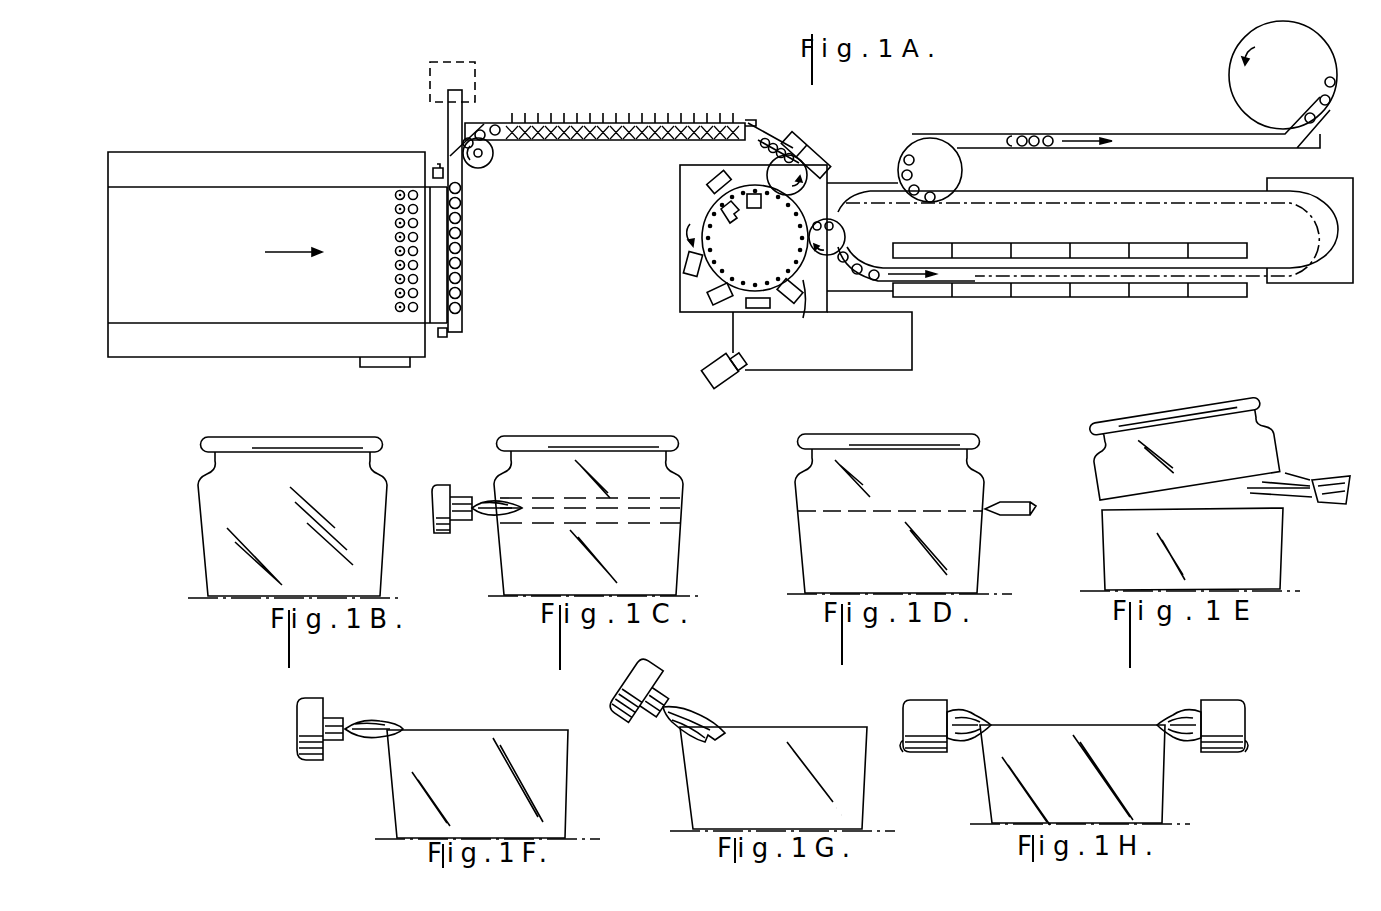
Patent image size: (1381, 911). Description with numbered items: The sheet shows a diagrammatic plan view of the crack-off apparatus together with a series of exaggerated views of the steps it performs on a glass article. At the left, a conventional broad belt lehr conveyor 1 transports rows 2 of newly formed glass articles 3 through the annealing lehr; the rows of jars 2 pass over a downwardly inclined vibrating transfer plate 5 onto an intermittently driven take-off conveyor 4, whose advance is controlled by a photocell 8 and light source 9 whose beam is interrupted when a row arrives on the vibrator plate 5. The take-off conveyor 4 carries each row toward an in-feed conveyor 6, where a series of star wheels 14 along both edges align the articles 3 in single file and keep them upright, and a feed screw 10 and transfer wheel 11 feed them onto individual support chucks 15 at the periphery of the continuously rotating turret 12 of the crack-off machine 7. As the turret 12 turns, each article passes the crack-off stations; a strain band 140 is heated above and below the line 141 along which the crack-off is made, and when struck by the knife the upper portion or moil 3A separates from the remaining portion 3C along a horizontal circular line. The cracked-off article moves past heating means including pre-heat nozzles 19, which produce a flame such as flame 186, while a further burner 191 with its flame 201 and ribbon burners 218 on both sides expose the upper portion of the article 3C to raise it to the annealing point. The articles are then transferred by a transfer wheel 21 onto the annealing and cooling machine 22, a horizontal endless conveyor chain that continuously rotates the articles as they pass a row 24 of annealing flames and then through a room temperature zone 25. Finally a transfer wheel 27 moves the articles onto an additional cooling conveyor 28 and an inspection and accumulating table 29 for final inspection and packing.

In FIG. 1A, the lehr conveyor 1 is at (205, 267).
In FIG. 1A, the rows of glass articles 2 is at (396, 281).
In FIG. 1A, the glass article 3 is at (464, 277).
In FIG. 1B, the glass article 3 is at (297, 525).
In FIG. 1A, the take-off conveyor 4 is at (463, 325).
In FIG. 1A, the vibrating transfer plate 5 is at (433, 296).
In FIG. 1A, the in-feed conveyor 6 is at (511, 122).
In FIG. 1A, the crack-off machine 7 is at (666, 262).
In FIG. 1A, the photocell 8 is at (436, 166).
In FIG. 1A, the light source 9 is at (442, 340).
In FIG. 1A, the feed screw 10 is at (777, 134).
In FIG. 1A, the transfer wheel 11 is at (808, 167).
In FIG. 1A, the rotating turret 12 is at (768, 268).
In FIG. 1A, the star wheels 14 is at (565, 144).
In FIG. 1A, the support chucks 15 is at (806, 312).
In FIG. 1A, the transfer wheel 21 is at (848, 238).
In FIG. 1A, the annealing and cooling machine 22 is at (978, 270).
In FIG. 1A, the row of annealing flames 24 is at (1155, 258).
In FIG. 1A, the room temperature zone 25 is at (1330, 273).
In FIG. 1A, the transfer wheel 27 is at (932, 156).
In FIG. 1A, the cooling conveyor 28 is at (1150, 135).
In FIG. 1A, the inspection and accumulating table 29 is at (1238, 62).
In FIG. 1C, the strain band 140 is at (690, 506).
In FIG. 1C, the crack-off line 141 is at (690, 522).
In FIG. 1D, the moil 3A is at (905, 491).
In FIG. 1E, the moil 3A is at (1202, 468).
In FIG. 1D, the remaining portion of glass article 3C is at (910, 564).
In FIG. 1E, the remaining portion of glass article 3C is at (1210, 560).
In FIG. 1F, the remaining portion of glass article 3C is at (492, 790).
In FIG. 1G, the remaining portion of glass article 3C is at (787, 788).
In FIG. 1H, the remaining portion of glass article 3C is at (1085, 783).
In FIG. 1F, the pre-heat nozzles 19 is at (315, 704).
In FIG. 1F, the flame 186 is at (340, 741).
In FIG. 1G, the burner 191 is at (650, 700).
In FIG. 1G, the flame 201 is at (690, 713).
In FIG. 1H, the ribbon burners 218 is at (942, 700).